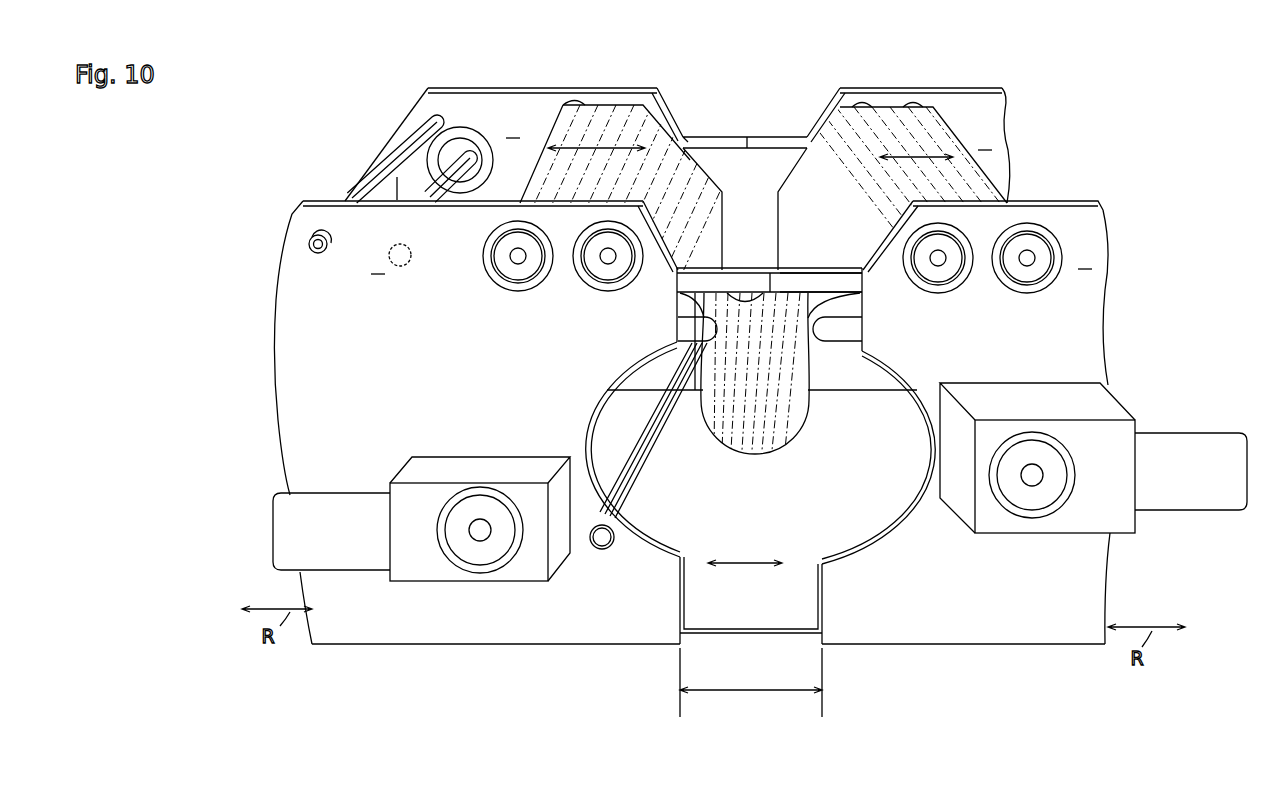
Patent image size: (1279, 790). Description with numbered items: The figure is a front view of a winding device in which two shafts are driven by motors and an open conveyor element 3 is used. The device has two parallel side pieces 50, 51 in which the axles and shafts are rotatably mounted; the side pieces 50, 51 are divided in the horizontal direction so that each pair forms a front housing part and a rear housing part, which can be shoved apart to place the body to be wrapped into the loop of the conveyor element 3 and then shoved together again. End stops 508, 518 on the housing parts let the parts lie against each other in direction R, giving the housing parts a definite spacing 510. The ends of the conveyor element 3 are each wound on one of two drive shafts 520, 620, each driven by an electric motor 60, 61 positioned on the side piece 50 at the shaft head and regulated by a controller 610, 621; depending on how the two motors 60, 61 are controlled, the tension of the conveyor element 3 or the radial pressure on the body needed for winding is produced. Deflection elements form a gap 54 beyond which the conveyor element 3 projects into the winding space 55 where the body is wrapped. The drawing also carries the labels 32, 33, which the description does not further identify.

The side piece 50 is at (288, 258).
The side piece 51 is at (990, 100).
The gap 54 is at (735, 180).
The end stop 508 is at (738, 137).
The end stop 518 is at (797, 137).
The conveyor element 3 is at (813, 183).
The direction of movement 32 is at (590, 149).
The direction of movement 33 is at (752, 566).
The winding space 55 is at (819, 489).
The drive shaft 520 is at (480, 528).
The controller 610 is at (335, 513).
The electric motor 61 is at (425, 560).
The drive shaft 620 is at (1033, 475).
The controller 621 is at (1193, 452).
The electric motor 60 is at (1095, 502).
The spacing 510 is at (753, 693).